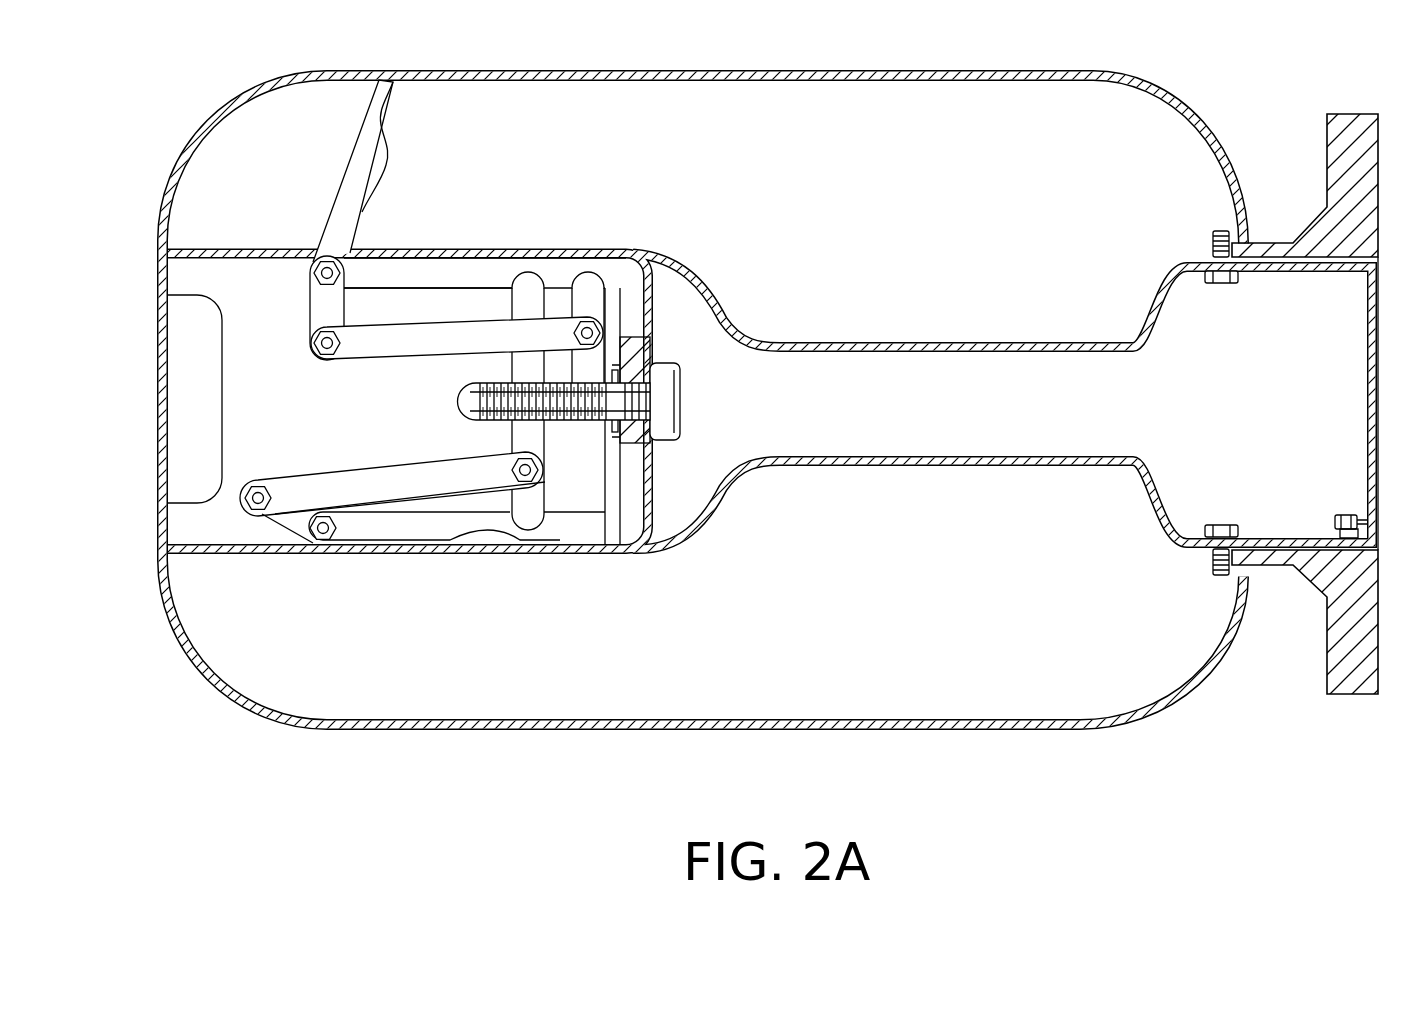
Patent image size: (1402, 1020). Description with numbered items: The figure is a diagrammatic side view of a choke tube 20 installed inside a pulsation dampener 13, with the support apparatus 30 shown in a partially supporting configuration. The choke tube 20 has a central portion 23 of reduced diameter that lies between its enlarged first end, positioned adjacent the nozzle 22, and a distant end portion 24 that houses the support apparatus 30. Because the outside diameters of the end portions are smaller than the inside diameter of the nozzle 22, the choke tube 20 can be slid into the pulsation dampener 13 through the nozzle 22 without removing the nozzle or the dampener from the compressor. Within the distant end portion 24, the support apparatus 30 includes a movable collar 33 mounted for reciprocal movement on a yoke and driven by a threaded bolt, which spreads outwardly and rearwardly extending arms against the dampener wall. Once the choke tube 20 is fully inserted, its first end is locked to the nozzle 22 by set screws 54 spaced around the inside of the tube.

The pulsation dampener 13 is at (632, 70).
The choke tube 20 is at (838, 190).
The nozzle 22 is at (1264, 243).
The central portion 23 is at (1022, 344).
The distant end portion 24 is at (196, 242).
The support apparatus 30 is at (513, 580).
The movable collar 33 is at (486, 248).
The set screws 54 is at (1226, 285).